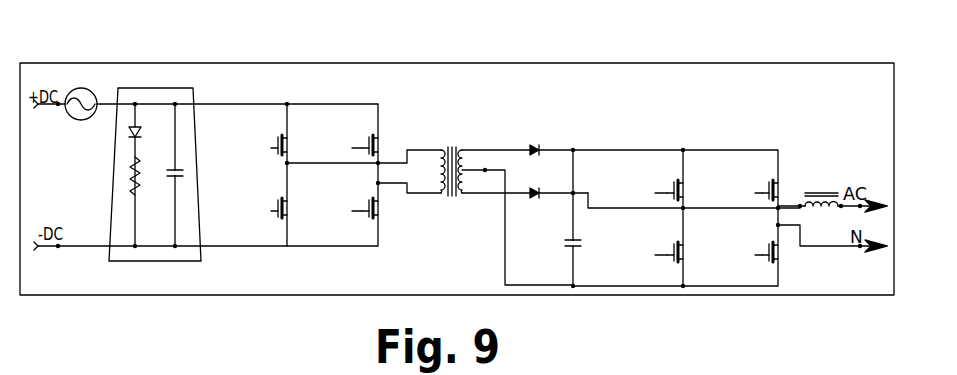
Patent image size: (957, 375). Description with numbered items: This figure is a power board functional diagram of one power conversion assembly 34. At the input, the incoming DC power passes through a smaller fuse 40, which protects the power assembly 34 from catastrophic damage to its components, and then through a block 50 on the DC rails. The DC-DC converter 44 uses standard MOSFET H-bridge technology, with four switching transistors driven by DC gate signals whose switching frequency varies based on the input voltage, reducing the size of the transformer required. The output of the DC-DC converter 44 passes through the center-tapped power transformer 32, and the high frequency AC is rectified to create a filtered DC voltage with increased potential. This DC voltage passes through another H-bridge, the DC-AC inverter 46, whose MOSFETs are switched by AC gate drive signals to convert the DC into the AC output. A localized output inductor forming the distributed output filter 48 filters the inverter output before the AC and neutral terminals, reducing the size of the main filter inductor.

The power conversion assembly 34 is at (589, 58).
The fuse 40 is at (80, 88).
The input filter circuit 50 is at (150, 100).
The DC-DC converter 44 is at (295, 63).
The power transformer 32 is at (444, 66).
The DC-AC inverter 46 is at (720, 118).
The output filter 48 is at (840, 180).